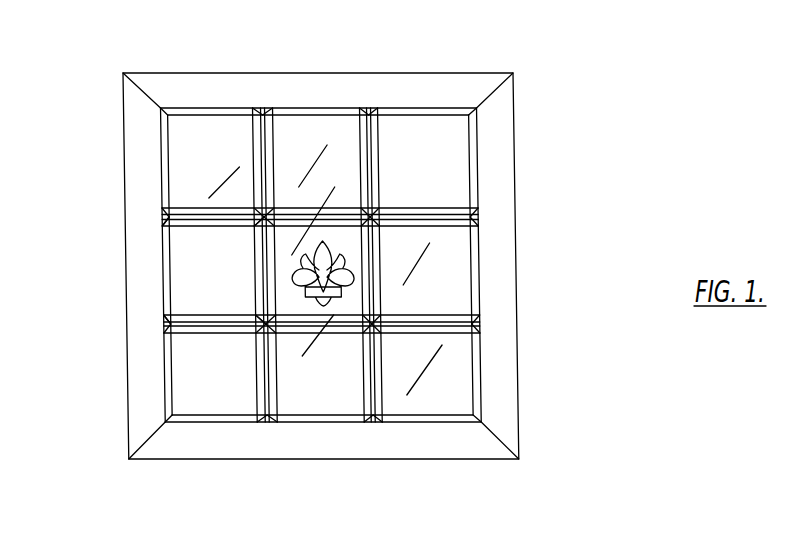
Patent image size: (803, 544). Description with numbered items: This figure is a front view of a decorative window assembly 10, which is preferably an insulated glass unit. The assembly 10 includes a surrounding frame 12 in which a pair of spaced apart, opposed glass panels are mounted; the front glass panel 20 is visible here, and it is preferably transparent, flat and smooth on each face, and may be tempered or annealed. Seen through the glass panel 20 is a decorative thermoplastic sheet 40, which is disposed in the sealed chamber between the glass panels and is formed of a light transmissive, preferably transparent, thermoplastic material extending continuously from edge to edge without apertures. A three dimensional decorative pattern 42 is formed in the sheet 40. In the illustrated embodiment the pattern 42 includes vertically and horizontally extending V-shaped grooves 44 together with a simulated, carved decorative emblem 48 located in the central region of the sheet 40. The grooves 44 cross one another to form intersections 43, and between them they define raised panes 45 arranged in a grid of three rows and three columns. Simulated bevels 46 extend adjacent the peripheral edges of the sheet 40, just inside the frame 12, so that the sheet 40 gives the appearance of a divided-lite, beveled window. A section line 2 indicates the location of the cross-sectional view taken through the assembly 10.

The decorative window assembly 10 is at (592, 229).
The frame 12 is at (507, 348).
The glass panel 20 is at (459, 423).
The decorative thermoplastic sheet 40 is at (422, 402).
The three dimensional decorative pattern 42 is at (403, 190).
The intersections 43 is at (247, 232).
The V-shaped grooves 44 is at (363, 145).
The raised panes 45 is at (187, 247).
The simulated bevels 46 is at (345, 113).
The simulated carved decorative emblem 48 is at (342, 310).
The section line 2- 2 is at (81, 258).